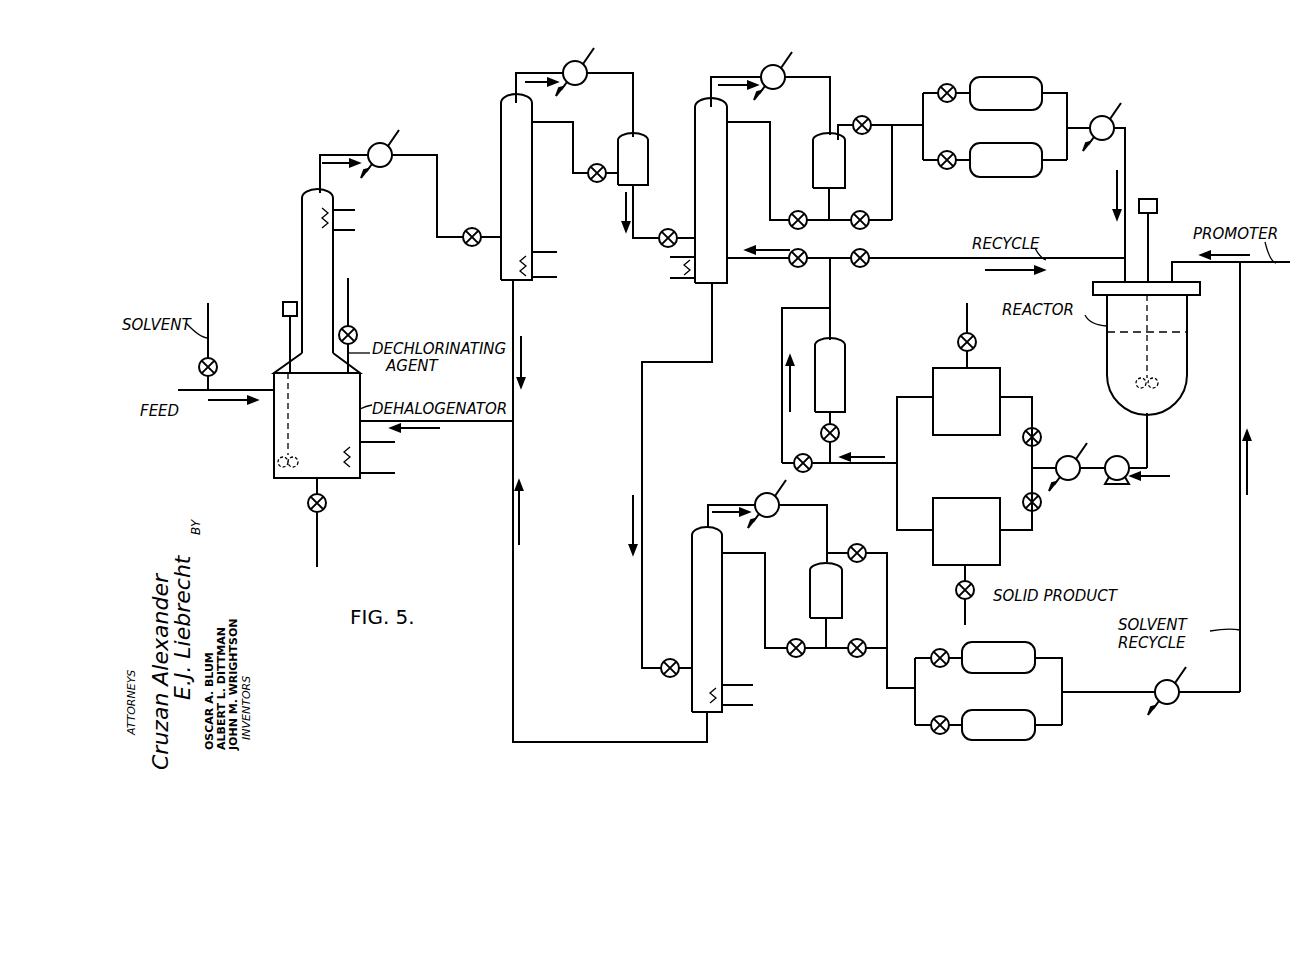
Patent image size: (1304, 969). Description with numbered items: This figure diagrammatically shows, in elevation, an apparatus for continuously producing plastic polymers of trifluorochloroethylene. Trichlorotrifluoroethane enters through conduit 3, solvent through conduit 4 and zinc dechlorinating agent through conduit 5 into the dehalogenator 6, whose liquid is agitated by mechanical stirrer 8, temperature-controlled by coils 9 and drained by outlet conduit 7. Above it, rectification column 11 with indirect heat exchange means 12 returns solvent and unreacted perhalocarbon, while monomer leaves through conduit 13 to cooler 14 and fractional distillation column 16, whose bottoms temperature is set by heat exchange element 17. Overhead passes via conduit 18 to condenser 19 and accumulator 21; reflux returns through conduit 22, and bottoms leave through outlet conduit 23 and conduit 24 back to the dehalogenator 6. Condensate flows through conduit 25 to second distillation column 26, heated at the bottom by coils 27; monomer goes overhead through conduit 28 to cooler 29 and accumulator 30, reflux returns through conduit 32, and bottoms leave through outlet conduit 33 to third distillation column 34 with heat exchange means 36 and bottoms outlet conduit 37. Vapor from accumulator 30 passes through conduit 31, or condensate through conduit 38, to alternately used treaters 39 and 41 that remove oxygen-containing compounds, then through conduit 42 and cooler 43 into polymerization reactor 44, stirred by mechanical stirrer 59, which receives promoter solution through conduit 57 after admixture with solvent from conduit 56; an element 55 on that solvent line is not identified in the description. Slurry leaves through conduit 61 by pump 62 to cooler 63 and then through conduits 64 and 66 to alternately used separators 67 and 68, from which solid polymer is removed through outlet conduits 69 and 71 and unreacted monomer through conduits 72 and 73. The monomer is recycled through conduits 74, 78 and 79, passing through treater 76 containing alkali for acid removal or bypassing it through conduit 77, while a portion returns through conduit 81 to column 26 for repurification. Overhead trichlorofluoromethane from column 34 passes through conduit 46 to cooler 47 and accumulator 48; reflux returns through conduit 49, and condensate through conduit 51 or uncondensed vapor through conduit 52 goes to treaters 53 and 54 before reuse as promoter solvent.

The conduit 3 is at (185, 388).
The conduit 4 is at (216, 378).
The conduit 5 is at (350, 296).
The dehalogenator 6 is at (273, 452).
The outlet conduit 7 is at (320, 489).
The mechanical stirrer 8 is at (283, 305).
The heating or cooling coils 9 is at (387, 473).
The rectification column 11 is at (302, 262).
The indirect heat exchange means 12 is at (355, 210).
The conduit 13 is at (355, 156).
The cooler 14 is at (392, 148).
The fractional distillation column 16 is at (532, 224).
The indirect heat exchange element 17 is at (540, 252).
The conduit 18 is at (547, 74).
The cooler or condenser 19 is at (588, 68).
The accumulator 21 is at (645, 167).
The conduit 22 is at (573, 130).
The outlet conduit 23 is at (513, 315).
The conduit 24 is at (500, 427).
The conduit 25 is at (642, 239).
The second fractional distillation column 26 is at (727, 224).
The heat exchange means 27 is at (675, 279).
The conduit 28 is at (744, 78).
The cooler 29 is at (796, 70).
The accumulator 30 is at (813, 175).
The conduit 31 is at (878, 122).
The conduit 32 is at (770, 150).
The outlet conduit 33 is at (642, 432).
The third fractional distillation column 34 is at (715, 612).
The heat exchange means 36 is at (740, 686).
The outlet conduit 37 is at (592, 741).
The conduit 38 is at (892, 193).
The treater 39 is at (1006, 84).
The treater 41 is at (1006, 150).
The conduit 42 is at (1079, 125).
The cooler 43 is at (1120, 116).
The polymerization reactor 44 is at (1178, 310).
The conduit 46 is at (738, 506).
The cooler 47 is at (780, 500).
The accumulator 48 is at (812, 603).
The conduit 49 is at (763, 641).
The conduit 51 is at (873, 654).
The conduit 52 is at (888, 623).
The treater 53 is at (994, 665).
The treater 54 is at (1008, 718).
The heat exchanger 55 is at (1182, 684).
The conduit 56 is at (1104, 692).
The conduit 57 is at (1241, 270).
The mechanical stirrer 59 is at (1157, 205).
The conduit 61 is at (1148, 437).
The pump 62 is at (1115, 460).
The cooler 63 is at (1080, 443).
The conduit 64 is at (1034, 412).
The conduit 66 is at (1005, 548).
The separator 67 is at (960, 428).
The separator 68 is at (966, 513).
The outlet conduit 69 is at (975, 352).
The outlet conduit 71 is at (968, 610).
The conduit 72 is at (897, 434).
The conduit 73 is at (897, 512).
The conduit 74 is at (880, 466).
The treater 76 is at (845, 385).
The conduit 77 is at (782, 378).
The conduit 78 is at (830, 291).
The conduit 79 is at (948, 261).
The conduit 81 is at (792, 264).